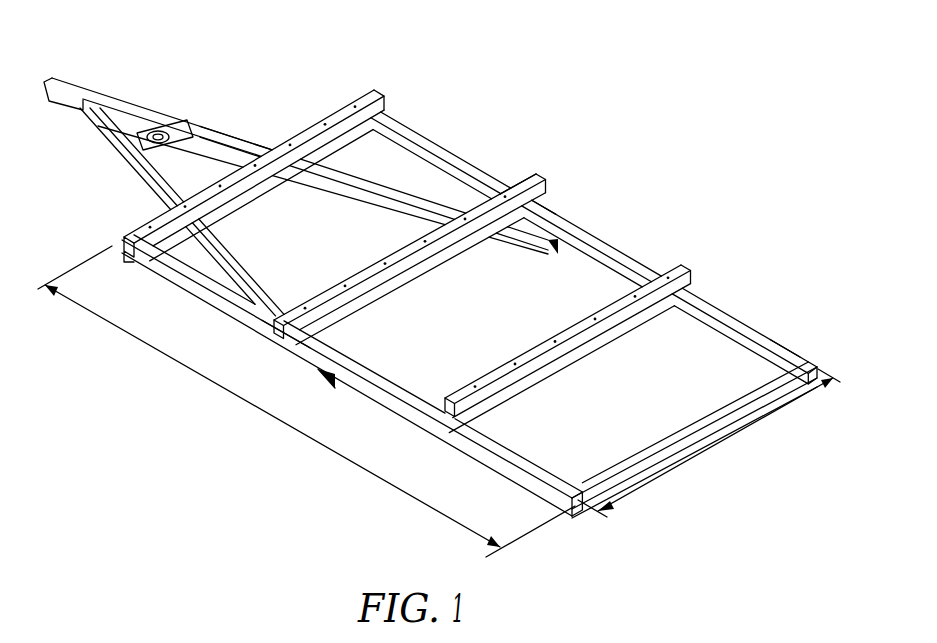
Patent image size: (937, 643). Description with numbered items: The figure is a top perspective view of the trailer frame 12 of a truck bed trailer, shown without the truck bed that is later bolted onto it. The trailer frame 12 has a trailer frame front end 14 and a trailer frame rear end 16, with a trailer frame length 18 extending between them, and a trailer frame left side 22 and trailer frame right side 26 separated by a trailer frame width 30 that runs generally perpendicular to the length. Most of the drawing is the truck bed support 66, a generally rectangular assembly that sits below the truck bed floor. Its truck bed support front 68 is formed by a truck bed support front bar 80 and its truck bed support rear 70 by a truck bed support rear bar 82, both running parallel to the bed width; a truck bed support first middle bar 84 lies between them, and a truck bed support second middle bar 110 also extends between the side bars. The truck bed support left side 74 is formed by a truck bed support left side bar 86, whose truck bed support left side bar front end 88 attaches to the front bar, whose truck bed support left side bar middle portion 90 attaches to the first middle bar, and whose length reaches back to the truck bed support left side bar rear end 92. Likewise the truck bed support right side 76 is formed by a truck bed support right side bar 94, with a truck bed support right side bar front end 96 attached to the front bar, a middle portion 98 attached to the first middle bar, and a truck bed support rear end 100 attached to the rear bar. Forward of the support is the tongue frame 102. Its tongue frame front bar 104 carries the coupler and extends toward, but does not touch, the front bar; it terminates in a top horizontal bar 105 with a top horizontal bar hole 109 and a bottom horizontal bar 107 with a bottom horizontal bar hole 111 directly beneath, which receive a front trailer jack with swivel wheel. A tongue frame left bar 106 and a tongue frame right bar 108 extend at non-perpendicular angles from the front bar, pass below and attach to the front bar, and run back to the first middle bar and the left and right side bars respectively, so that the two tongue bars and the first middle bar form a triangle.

The trailer frame 12 is at (676, 174).
The trailer frame front end 14 is at (44, 87).
The trailer frame rear end 16 is at (703, 423).
The trailer frame length 18 is at (313, 439).
The trailer frame left side 22 is at (480, 452).
The trailer frame right side 26 is at (595, 253).
The trailer frame width 30 is at (708, 448).
The truck bed support 66 is at (604, 148).
The truck bed support front 68 is at (378, 88).
The truck bed support rear 70 is at (813, 367).
The truck bed support left side 74 is at (380, 392).
The truck bed support right side 76 is at (637, 263).
The truck bed support front bar 80 is at (330, 122).
The truck bed support rear bar 82 is at (652, 455).
The truck bed support first middle bar 84 is at (410, 277).
The truck bed support left side bar 86 is at (283, 335).
The truck bed support left side bar front end 88 is at (130, 263).
The truck bed support left side bar middle portion 90 is at (263, 325).
The truck bed support left side bar rear end 92 is at (567, 505).
The truck bed support right side bar 94 is at (493, 182).
The truck bed support right side bar front end 96 is at (385, 103).
The middle portion 98 is at (525, 203).
The truck bed support rear end 100 is at (792, 355).
The tongue frame 102 is at (160, 82).
The tongue frame front bar 104 is at (60, 78).
The top horizontal bar 105 is at (180, 133).
The tongue frame left bar 106 is at (130, 157).
The bottom horizontal bar 107 is at (233, 128).
The tongue frame right bar 108 is at (230, 133).
The top horizontal bar hole 109 is at (157, 128).
The truck bed support second middle bar 110 is at (563, 368).
The bottom horizontal bar hole 111 is at (170, 200).